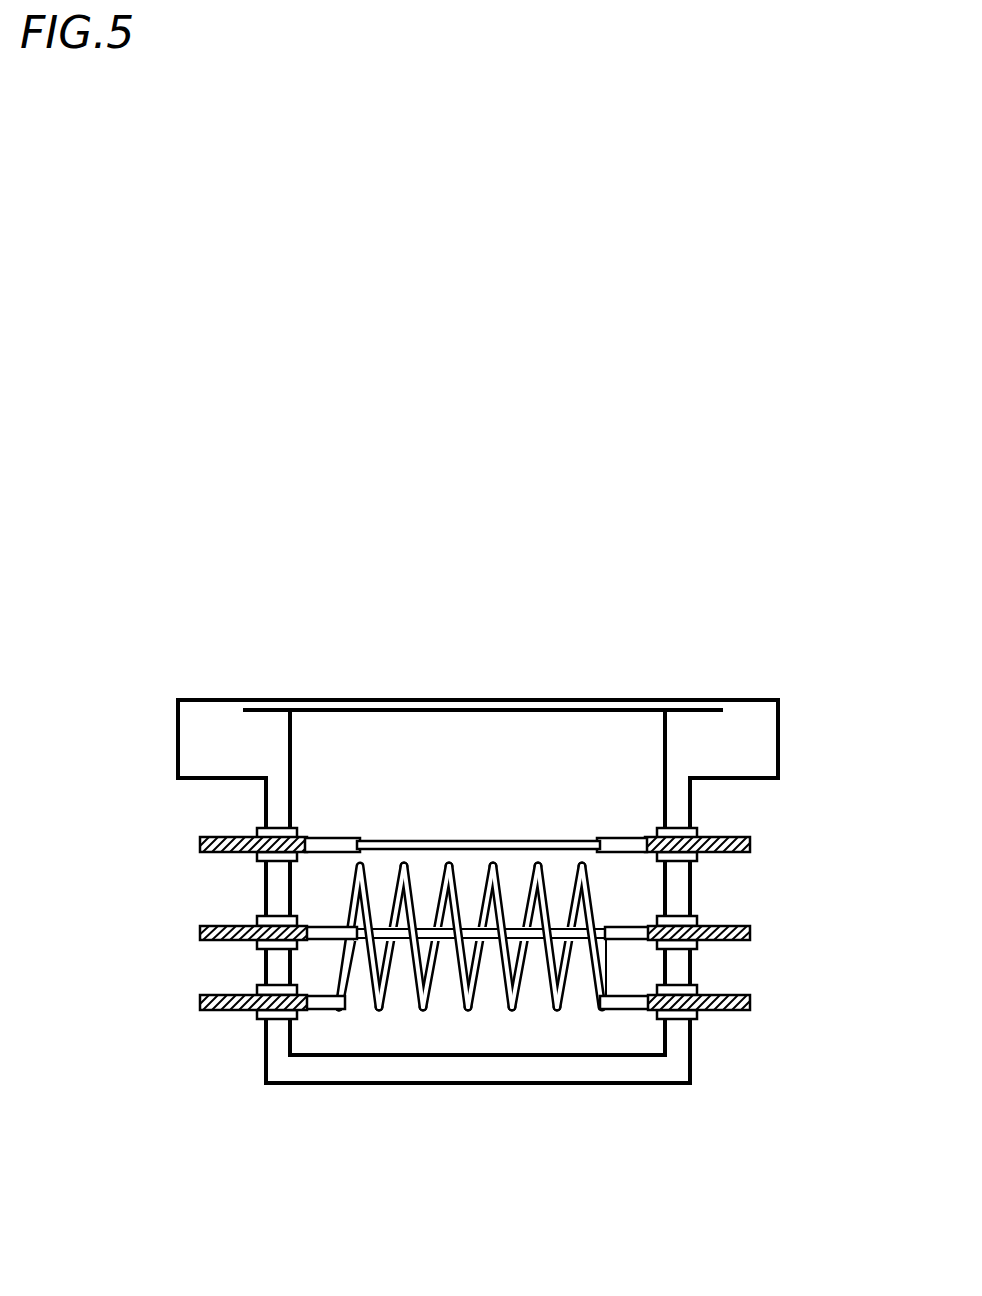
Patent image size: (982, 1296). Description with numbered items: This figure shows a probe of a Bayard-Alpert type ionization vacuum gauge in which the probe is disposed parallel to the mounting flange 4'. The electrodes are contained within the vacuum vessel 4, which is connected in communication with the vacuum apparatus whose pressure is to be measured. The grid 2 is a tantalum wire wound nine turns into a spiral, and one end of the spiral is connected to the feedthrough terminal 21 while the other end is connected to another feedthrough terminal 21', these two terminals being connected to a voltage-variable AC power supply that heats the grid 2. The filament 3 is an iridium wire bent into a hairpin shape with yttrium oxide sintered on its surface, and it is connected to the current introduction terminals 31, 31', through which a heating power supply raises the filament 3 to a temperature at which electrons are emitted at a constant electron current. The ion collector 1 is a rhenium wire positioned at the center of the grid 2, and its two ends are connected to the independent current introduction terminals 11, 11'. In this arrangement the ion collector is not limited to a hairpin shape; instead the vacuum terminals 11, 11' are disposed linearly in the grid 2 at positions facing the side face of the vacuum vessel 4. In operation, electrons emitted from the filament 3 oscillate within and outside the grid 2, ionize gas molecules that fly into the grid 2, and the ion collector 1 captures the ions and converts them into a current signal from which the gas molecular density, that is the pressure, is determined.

The ion collector 1 is at (538, 933).
The grid 2 is at (418, 984).
The filament 3 is at (438, 845).
The vacuum vessel 4 is at (454, 962).
The mounting flange 4' is at (509, 863).
The current introduction terminal of the ion collector 11 is at (224, 909).
The current introduction terminal of the ion collector 11' is at (733, 901).
The feedthrough terminal of the grid 21 is at (218, 990).
The feedthrough terminal of the grid 21' is at (730, 977).
The current introduction terminal of the hot-cathode filament 31 is at (210, 826).
The current introduction terminal of the hot-cathode filament 31' is at (742, 826).